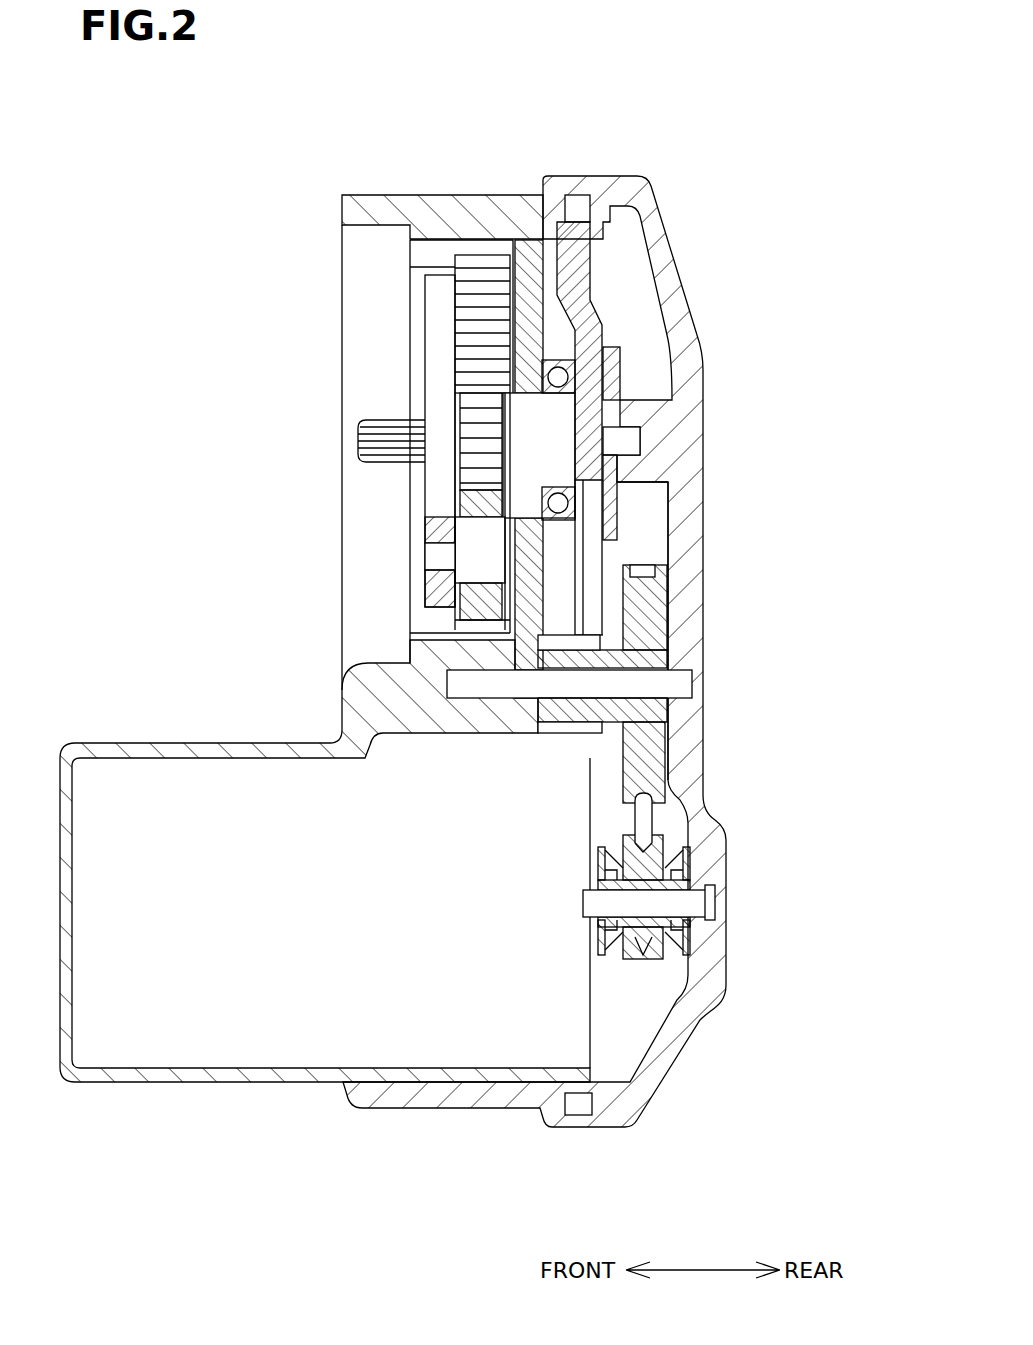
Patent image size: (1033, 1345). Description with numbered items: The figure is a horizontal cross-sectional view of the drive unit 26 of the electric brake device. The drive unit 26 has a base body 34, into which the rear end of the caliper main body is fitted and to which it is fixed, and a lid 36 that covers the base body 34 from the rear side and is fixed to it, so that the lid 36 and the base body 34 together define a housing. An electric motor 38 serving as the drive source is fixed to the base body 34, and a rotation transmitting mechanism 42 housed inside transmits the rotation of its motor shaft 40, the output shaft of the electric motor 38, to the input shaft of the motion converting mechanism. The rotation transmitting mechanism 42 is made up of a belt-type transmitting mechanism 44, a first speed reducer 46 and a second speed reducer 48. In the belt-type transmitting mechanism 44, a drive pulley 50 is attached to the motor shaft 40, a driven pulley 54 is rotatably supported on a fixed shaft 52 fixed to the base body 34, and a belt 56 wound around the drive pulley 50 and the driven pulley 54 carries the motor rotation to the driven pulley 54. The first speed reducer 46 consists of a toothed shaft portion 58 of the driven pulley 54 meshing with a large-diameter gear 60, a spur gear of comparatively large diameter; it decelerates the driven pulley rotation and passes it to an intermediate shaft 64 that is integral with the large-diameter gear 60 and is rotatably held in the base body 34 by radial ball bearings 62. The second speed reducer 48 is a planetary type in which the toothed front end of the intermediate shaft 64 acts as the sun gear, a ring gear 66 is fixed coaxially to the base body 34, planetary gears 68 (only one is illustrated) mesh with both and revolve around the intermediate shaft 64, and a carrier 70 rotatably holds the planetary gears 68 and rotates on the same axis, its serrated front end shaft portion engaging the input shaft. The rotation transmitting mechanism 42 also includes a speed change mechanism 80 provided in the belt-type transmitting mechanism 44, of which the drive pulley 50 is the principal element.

The drive unit 26 is at (781, 88).
The base body 34 is at (452, 205).
The lid 36 is at (680, 302).
The electric motor 38 is at (258, 1040).
The motor shaft 40 is at (700, 910).
The rotation transmitting mechanism 42 is at (718, 519).
The belt-type transmitting mechanism 44 is at (688, 793).
The first speed reducer 46 is at (636, 538).
The second speed reducer 48 is at (408, 357).
The drive pulley 50 is at (655, 950).
The fixed shaft 52 is at (662, 685).
The driven pulley 54 is at (655, 602).
The belt 56 is at (654, 820).
The shaft portion 58 is at (630, 653).
The large-diameter gear 60 is at (612, 377).
The radial ball bearings 62 is at (560, 372).
The intermediate shaft 64 is at (530, 435).
The ring gear 66 is at (432, 257).
The planetary gears 68 is at (455, 602).
The carrier 70 is at (437, 495).
The speed change mechanism 80 is at (698, 858).